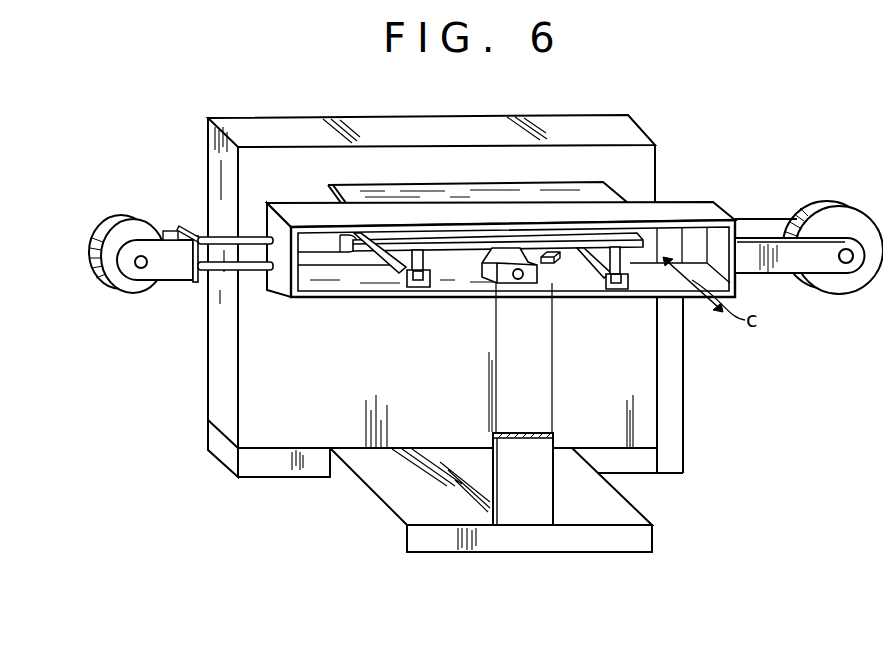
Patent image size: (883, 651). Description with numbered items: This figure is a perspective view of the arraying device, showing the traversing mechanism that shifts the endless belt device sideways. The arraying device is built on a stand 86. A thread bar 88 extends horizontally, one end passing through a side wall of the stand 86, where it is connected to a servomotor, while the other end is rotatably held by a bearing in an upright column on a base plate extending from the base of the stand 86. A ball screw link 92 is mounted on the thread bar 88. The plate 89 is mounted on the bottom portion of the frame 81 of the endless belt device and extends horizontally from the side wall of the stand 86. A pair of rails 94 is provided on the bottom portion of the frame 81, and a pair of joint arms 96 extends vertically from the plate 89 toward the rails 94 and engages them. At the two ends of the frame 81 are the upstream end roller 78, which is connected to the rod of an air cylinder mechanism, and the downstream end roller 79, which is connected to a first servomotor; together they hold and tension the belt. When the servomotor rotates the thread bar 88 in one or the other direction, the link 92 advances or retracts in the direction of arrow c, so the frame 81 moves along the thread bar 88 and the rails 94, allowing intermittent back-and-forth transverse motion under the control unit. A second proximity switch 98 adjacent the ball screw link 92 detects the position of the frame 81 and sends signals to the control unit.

The upstream end roller 78 is at (133, 222).
The downstream end roller 79 is at (815, 212).
The frame 81 is at (698, 213).
The stand 86 is at (309, 127).
The thread bar 88 is at (520, 279).
The plate 89 is at (477, 188).
The ball screw link 92 is at (488, 256).
The rails 94 is at (402, 272).
The joint arms 96 is at (382, 250).
The second proximity switch 98 is at (550, 251).